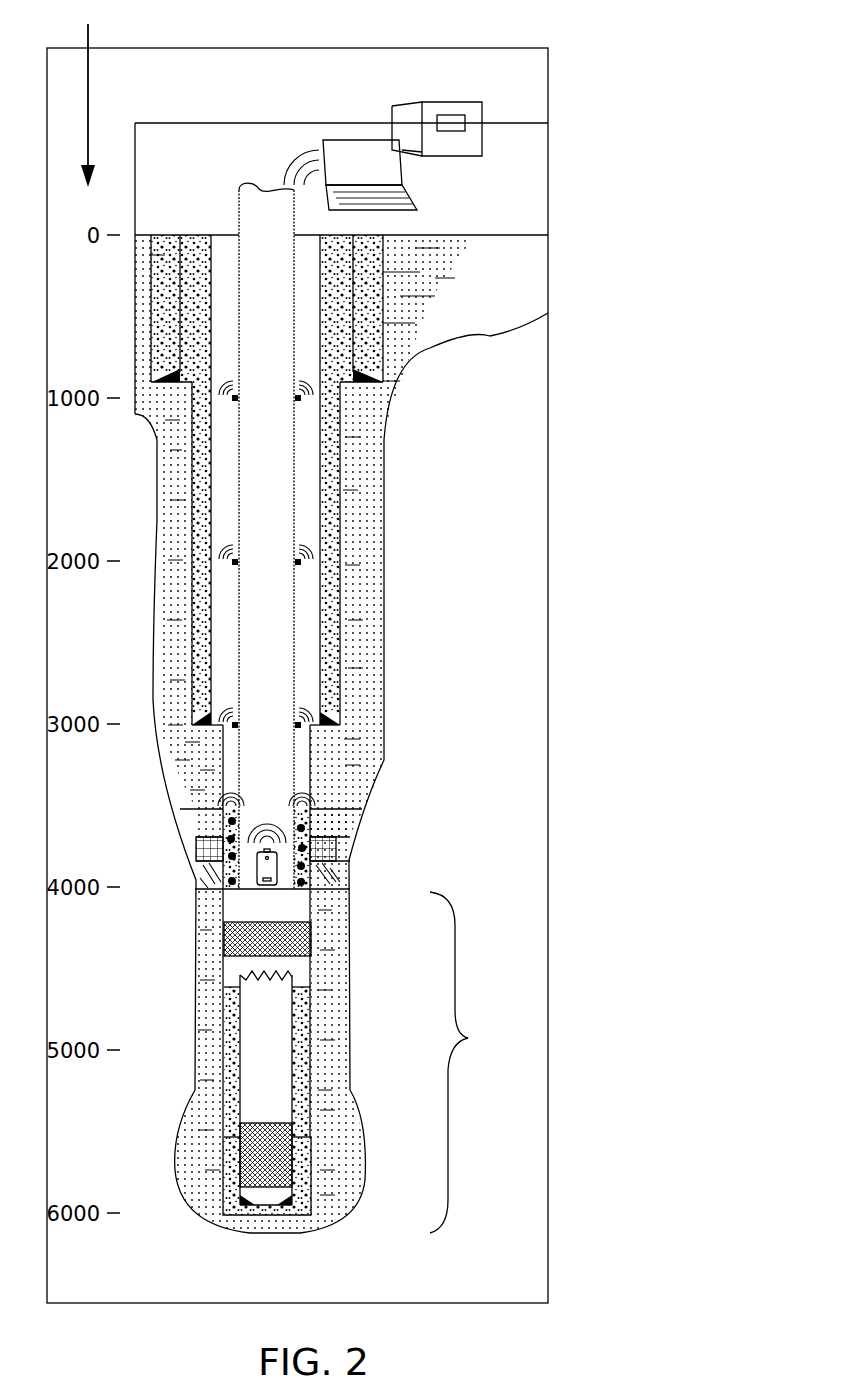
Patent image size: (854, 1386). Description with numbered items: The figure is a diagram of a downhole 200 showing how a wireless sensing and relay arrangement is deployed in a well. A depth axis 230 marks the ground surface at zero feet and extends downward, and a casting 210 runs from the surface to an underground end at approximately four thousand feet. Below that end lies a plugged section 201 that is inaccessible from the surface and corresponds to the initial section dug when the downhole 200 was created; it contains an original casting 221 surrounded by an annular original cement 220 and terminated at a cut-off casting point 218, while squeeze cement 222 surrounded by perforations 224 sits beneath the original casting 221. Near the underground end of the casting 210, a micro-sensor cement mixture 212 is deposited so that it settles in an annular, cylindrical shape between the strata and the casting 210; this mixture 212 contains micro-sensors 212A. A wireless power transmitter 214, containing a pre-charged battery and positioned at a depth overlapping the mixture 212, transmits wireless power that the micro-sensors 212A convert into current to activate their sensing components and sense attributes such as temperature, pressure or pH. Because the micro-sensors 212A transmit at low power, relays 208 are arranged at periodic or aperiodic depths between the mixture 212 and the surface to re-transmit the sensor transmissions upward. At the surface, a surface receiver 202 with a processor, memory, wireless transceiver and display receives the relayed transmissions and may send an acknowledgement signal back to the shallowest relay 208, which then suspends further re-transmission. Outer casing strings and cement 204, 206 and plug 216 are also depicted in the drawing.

The downhole 200 is at (286, 21).
The plugged section 201 is at (474, 1062).
The surface receiver 202 is at (352, 142).
The conductor casing 204 is at (362, 390).
The surface casing cement 206 is at (349, 432).
The relays 208 is at (301, 722).
The casting 210 is at (297, 751).
The micro-sensor cement mixture 212 is at (314, 817).
The micro-sensors 212A is at (232, 820).
The wireless power transmitter 214 is at (285, 872).
The cement plug 216 is at (314, 940).
The cut-off casting point 218 is at (296, 977).
The original cement 220 is at (323, 1062).
The original casting 221 is at (268, 1018).
The squeeze cement 222 is at (297, 1133).
The perforations 224 is at (311, 1168).
The depth axis 230 is at (89, 93).